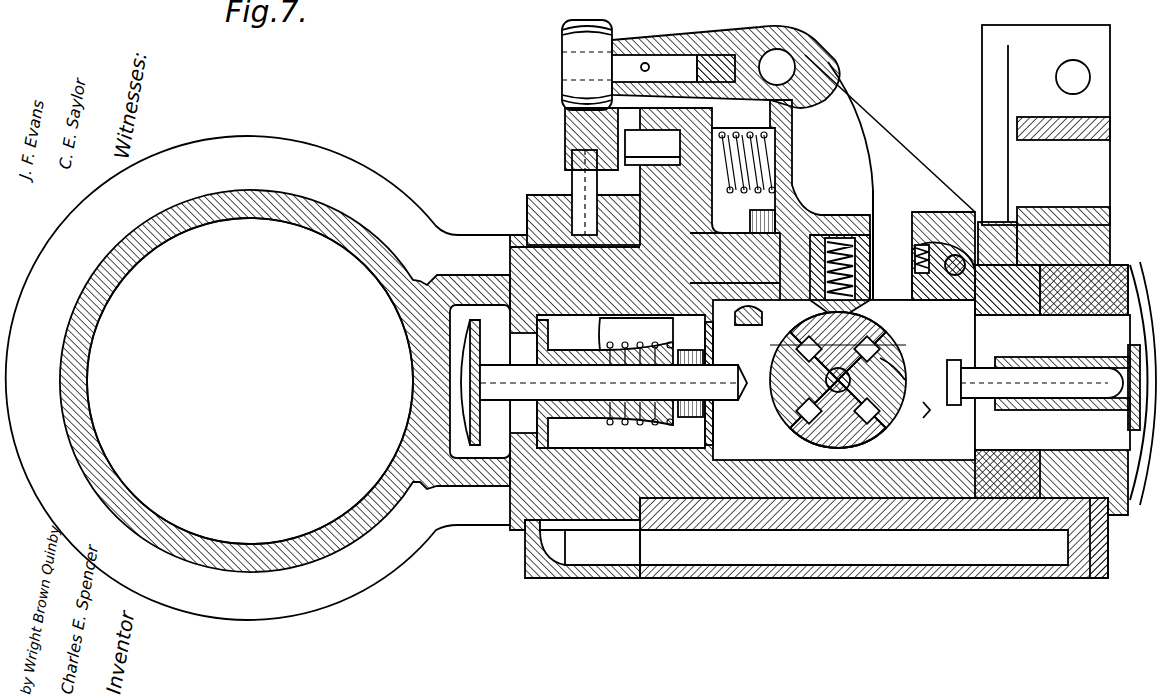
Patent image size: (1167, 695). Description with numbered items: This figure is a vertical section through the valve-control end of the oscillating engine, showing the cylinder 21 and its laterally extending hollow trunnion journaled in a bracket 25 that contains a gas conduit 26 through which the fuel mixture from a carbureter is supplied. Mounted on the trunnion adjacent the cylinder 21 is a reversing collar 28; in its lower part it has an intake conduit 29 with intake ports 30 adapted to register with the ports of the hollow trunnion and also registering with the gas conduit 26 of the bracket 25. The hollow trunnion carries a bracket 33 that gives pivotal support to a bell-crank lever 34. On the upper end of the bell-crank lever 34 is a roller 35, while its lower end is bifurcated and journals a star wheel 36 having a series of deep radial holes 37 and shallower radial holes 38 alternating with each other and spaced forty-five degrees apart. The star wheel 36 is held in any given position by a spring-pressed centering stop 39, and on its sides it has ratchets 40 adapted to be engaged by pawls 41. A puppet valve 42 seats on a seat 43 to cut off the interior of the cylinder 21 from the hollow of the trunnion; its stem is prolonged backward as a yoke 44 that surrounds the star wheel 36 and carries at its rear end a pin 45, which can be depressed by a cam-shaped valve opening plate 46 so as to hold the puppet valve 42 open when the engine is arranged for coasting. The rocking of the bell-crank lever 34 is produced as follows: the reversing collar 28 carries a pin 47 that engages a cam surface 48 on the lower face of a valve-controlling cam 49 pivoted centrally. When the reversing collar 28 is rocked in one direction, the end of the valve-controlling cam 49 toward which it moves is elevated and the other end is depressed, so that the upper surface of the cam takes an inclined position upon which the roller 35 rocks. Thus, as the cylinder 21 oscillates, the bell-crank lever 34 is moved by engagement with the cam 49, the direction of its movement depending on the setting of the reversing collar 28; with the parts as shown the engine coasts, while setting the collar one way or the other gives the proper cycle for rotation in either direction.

The cylinder 21 is at (92, 370).
The bracket 25 is at (1093, 555).
The gas conduit 26 is at (915, 552).
The reversing collar 28 is at (540, 580).
The intake conduit 29 is at (597, 543).
The intake ports 30 is at (578, 528).
The bracket 33 is at (905, 160).
The bell-crank lever 34 is at (830, 108).
The roller 35 is at (575, 60).
The star wheel 36 is at (828, 440).
The deep radial holes 37 is at (878, 345).
The shallower radial holes 38 is at (905, 380).
The spring-pressed centering stop 39 is at (745, 313).
The ratchets 40 is at (715, 330).
The pawls 41 is at (870, 300).
The puppet valve 42 is at (470, 414).
The seat 43 is at (537, 330).
The yoke 44 is at (925, 402).
The pin 45 is at (1085, 386).
The cam-shaped valve opening plate 46 is at (1130, 352).
The pin 47 is at (585, 188).
The cam surface 48 is at (578, 160).
The valve-controlling cam 49 is at (568, 135).